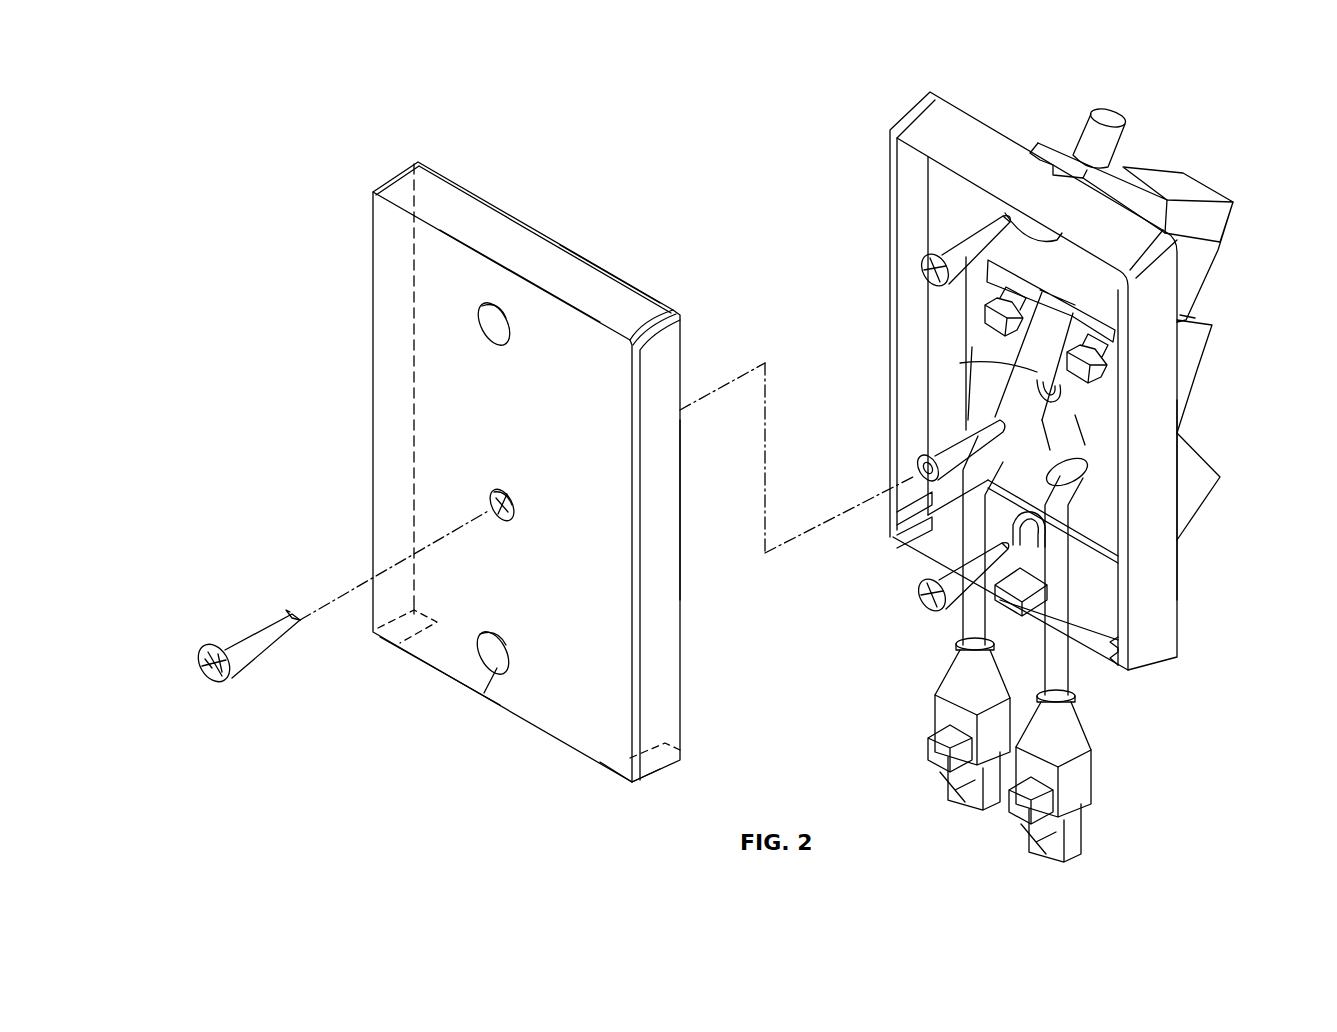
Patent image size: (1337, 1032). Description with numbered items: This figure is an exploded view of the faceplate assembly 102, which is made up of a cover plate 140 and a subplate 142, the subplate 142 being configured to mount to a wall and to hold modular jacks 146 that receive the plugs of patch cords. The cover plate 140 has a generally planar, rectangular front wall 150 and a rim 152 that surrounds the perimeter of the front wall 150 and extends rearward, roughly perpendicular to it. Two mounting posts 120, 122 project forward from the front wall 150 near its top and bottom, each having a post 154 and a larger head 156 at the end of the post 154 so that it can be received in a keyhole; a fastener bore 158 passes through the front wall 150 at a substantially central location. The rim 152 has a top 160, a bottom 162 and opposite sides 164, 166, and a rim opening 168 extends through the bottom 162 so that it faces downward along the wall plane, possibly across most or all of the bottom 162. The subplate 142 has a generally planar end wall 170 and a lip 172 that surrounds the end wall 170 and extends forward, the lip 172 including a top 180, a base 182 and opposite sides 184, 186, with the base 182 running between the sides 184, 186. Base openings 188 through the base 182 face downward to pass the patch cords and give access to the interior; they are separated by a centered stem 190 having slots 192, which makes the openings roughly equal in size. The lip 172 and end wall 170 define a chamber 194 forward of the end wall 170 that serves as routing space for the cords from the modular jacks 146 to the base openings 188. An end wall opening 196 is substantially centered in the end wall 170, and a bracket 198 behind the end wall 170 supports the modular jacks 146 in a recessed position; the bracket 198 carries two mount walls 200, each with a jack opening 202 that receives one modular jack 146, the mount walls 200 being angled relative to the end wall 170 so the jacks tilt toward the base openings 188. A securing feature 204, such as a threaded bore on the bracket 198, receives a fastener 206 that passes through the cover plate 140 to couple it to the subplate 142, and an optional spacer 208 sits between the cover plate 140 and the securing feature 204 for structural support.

The faceplate assembly 102 is at (322, 100).
The mounting post 120 is at (486, 306).
The mounting post 122 is at (478, 670).
The cover plate 140 is at (388, 306).
The subplate 142 is at (996, 138).
The modular jack 146 is at (1057, 145).
The front wall 150 is at (442, 645).
The rim 152 is at (455, 192).
The post 154 is at (512, 648).
The head 156 is at (493, 672).
The fastener bore 158 is at (488, 498).
The top 160 is at (590, 266).
The bottom 162 is at (668, 773).
The side 164 is at (672, 620).
The side 166 is at (396, 540).
The rim opening 168 is at (680, 760).
The end wall 170 is at (945, 316).
The lip 172 is at (1160, 633).
The top 180 is at (947, 105).
The base 182 is at (1115, 668).
The side 184 is at (1150, 505).
The side 186 is at (920, 172).
The base opening 188 is at (928, 548).
The stem 190 is at (985, 600).
The slot 192 is at (1038, 600).
The chamber 194 is at (915, 227).
The end wall opening 196 is at (1105, 530).
The bracket 198 is at (1060, 440).
The mount wall 200 is at (1193, 315).
The jack opening 202 is at (1190, 310).
The securing feature 204 is at (950, 380).
The fastener 206 is at (247, 645).
The spacer 208 is at (955, 445).